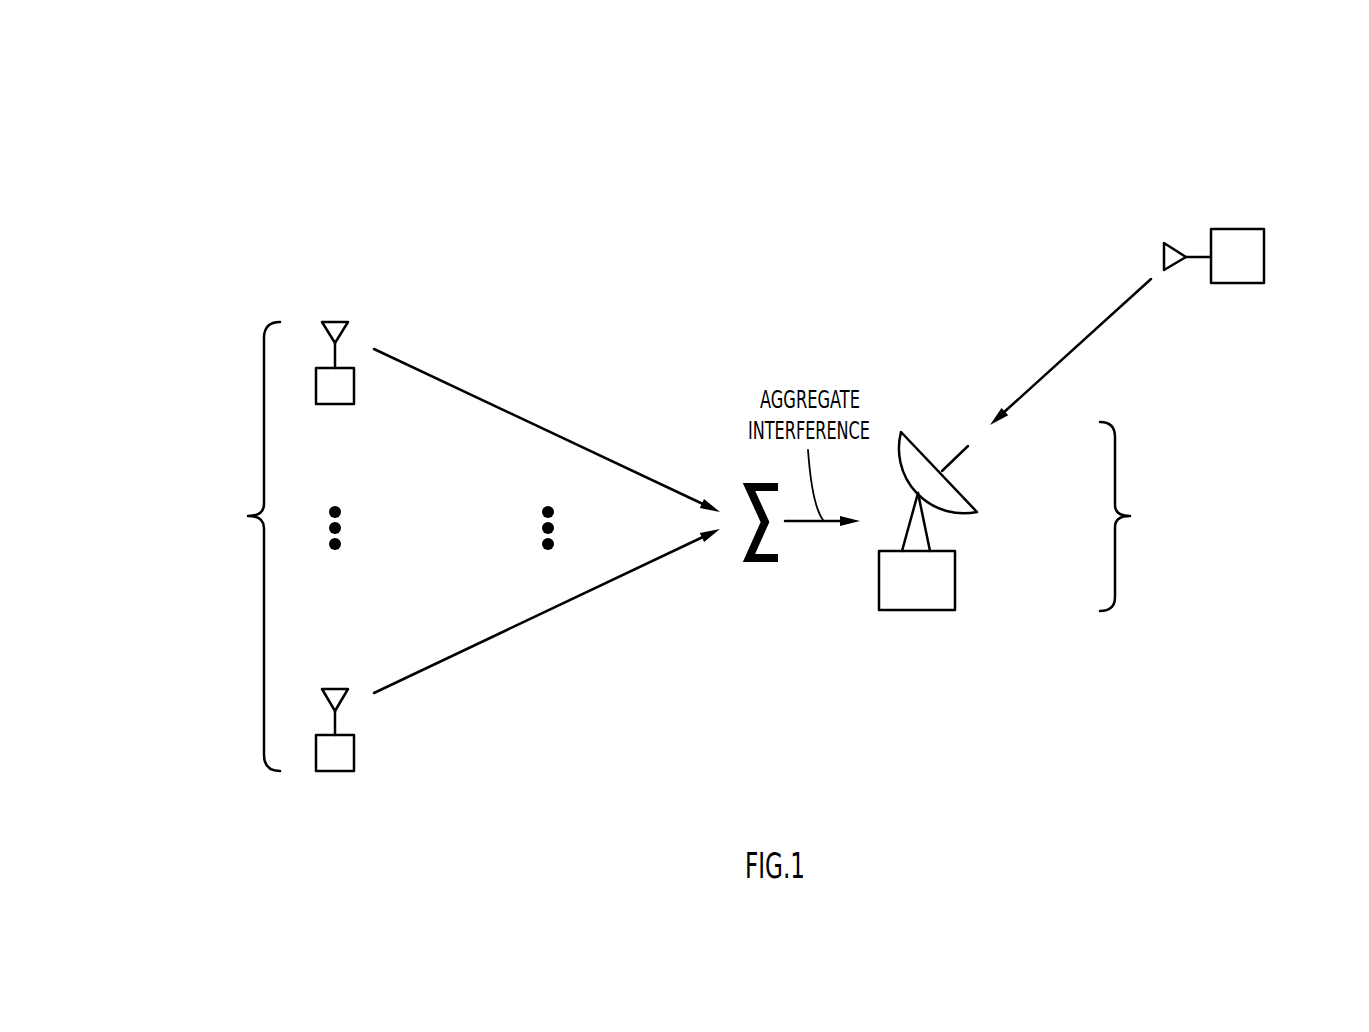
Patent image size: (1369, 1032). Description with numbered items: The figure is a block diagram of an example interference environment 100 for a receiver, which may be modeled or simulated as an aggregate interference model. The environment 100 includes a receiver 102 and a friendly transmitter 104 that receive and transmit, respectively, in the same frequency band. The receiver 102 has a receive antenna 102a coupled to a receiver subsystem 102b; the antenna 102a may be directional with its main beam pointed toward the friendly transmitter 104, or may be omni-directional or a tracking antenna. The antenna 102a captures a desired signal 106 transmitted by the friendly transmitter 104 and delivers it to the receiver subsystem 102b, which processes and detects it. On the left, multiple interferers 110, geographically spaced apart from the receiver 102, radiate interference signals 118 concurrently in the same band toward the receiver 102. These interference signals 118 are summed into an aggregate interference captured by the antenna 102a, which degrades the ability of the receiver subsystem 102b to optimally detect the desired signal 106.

The interference environment 100 is at (810, 224).
The interferers 110 is at (342, 546).
The interference signals 118 is at (590, 423).
The desired signal 106 is at (1066, 352).
The friendly transmitter 104 is at (1292, 249).
The receiver 102 is at (1037, 519).
The receive antenna 102a is at (966, 514).
The receiver subsystem 102b is at (955, 580).